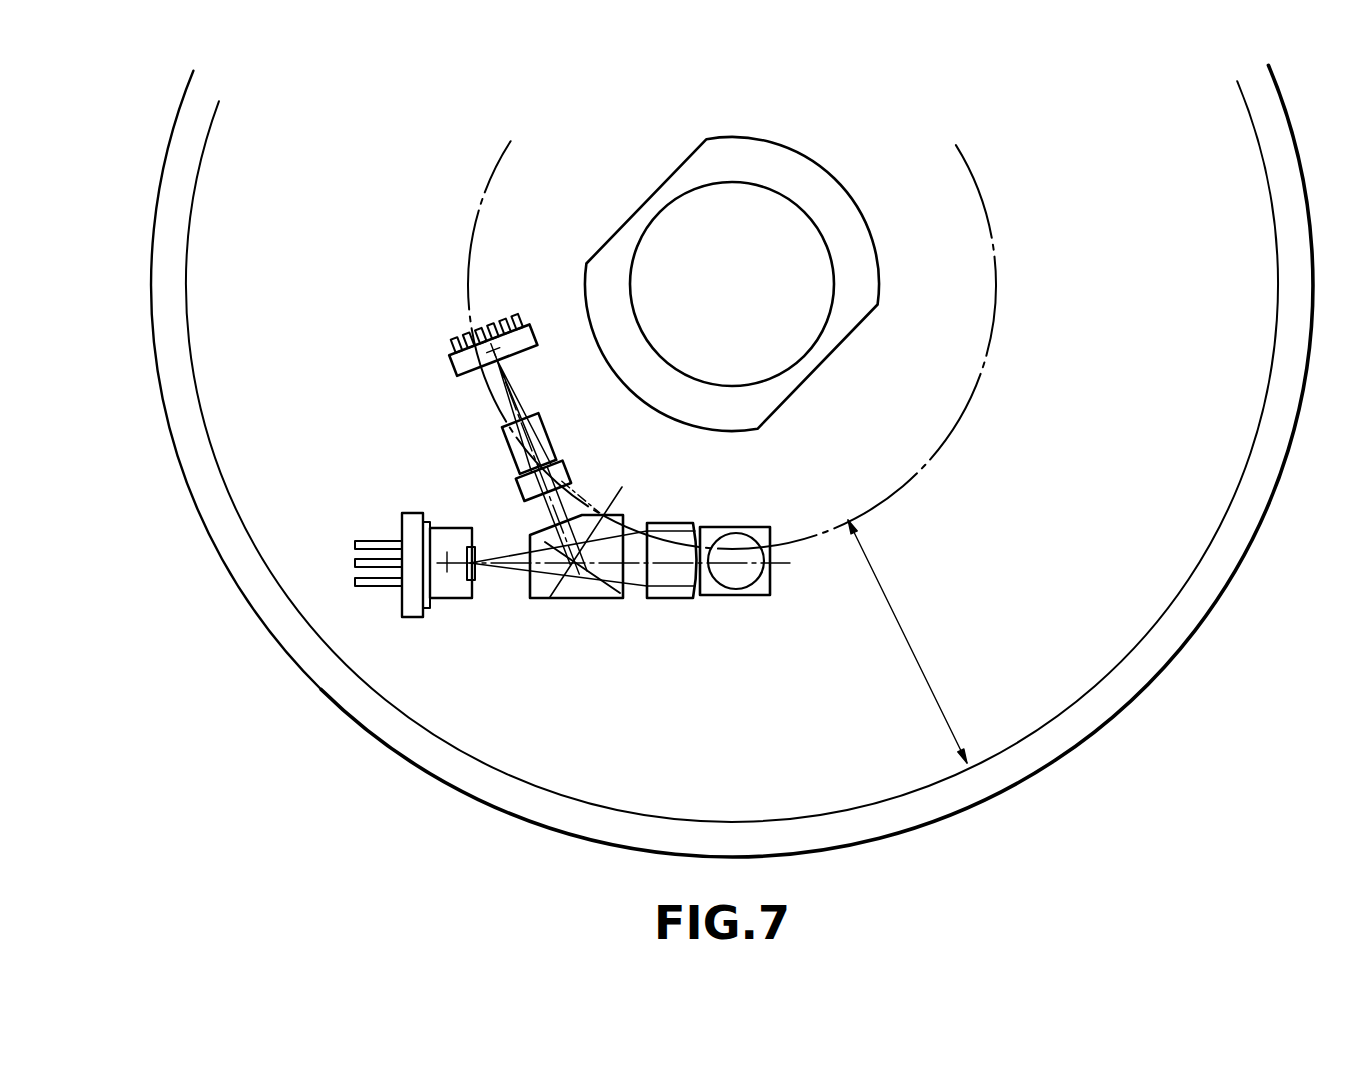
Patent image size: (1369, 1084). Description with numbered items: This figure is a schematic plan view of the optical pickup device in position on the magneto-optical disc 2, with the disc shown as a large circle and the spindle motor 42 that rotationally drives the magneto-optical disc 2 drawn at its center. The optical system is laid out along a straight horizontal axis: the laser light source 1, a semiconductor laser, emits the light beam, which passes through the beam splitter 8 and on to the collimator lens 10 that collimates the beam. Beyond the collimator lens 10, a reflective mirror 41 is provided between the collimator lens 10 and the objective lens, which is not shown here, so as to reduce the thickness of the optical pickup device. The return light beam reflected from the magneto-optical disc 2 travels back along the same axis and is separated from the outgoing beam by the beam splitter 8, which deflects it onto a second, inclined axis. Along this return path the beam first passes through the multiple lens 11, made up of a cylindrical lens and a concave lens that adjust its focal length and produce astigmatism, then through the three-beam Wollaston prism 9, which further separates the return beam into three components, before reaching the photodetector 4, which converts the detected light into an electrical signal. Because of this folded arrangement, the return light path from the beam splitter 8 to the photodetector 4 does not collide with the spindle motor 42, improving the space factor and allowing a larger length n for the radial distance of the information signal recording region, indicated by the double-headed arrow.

The laser light source 1 is at (455, 600).
The magneto-optical disc 2 is at (1271, 472).
The photodetector 4 is at (522, 335).
The beam splitter 8 is at (578, 600).
The three-beam Wollaston prism 9 is at (533, 430).
The collimator lens 10 is at (665, 600).
The multiple lens 11 is at (560, 472).
The reflective mirror 41 is at (760, 597).
The spindle motor 42 is at (837, 183).
The length n is at (920, 663).